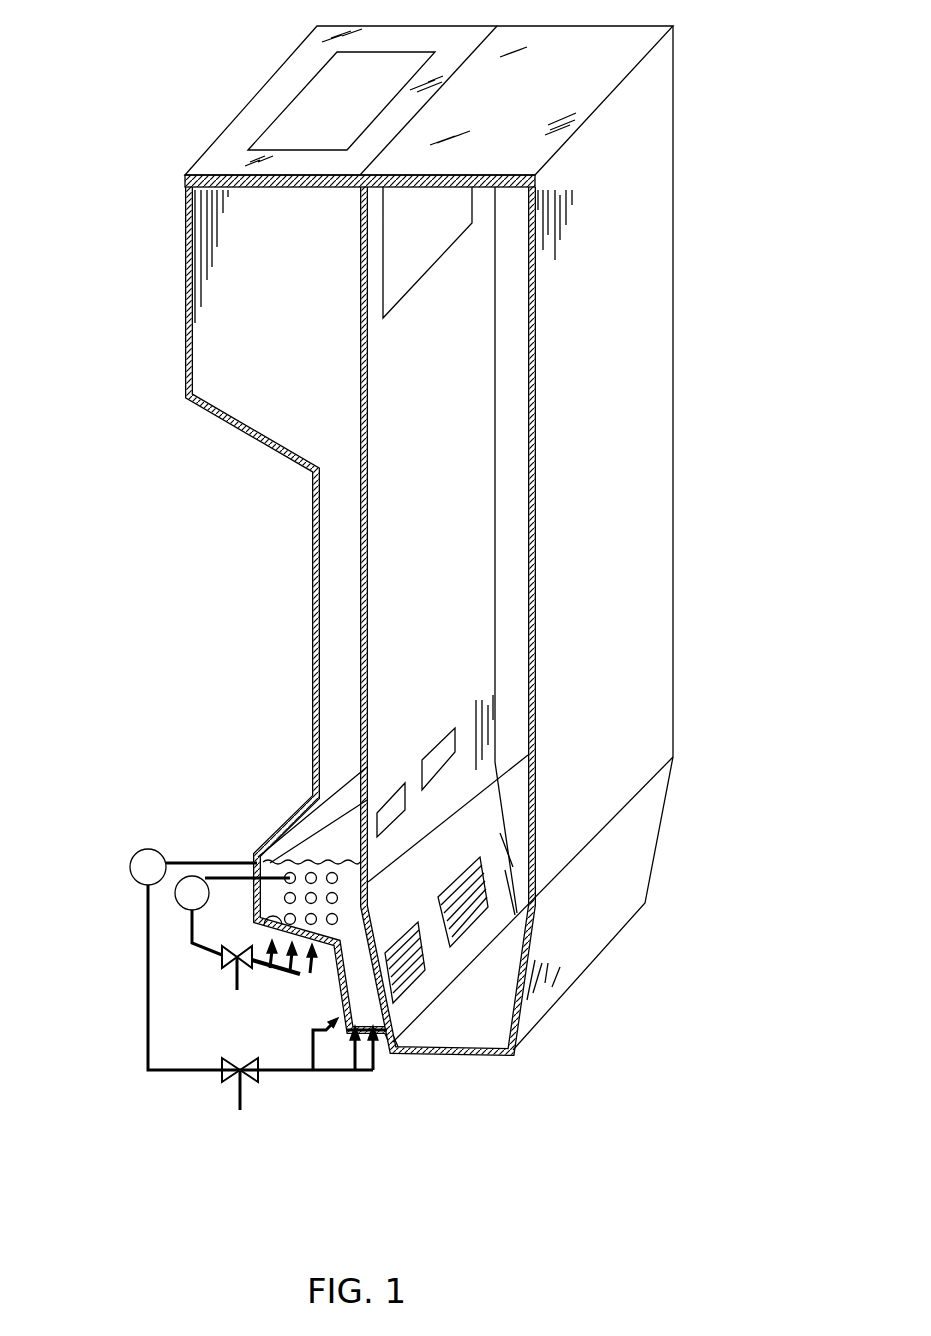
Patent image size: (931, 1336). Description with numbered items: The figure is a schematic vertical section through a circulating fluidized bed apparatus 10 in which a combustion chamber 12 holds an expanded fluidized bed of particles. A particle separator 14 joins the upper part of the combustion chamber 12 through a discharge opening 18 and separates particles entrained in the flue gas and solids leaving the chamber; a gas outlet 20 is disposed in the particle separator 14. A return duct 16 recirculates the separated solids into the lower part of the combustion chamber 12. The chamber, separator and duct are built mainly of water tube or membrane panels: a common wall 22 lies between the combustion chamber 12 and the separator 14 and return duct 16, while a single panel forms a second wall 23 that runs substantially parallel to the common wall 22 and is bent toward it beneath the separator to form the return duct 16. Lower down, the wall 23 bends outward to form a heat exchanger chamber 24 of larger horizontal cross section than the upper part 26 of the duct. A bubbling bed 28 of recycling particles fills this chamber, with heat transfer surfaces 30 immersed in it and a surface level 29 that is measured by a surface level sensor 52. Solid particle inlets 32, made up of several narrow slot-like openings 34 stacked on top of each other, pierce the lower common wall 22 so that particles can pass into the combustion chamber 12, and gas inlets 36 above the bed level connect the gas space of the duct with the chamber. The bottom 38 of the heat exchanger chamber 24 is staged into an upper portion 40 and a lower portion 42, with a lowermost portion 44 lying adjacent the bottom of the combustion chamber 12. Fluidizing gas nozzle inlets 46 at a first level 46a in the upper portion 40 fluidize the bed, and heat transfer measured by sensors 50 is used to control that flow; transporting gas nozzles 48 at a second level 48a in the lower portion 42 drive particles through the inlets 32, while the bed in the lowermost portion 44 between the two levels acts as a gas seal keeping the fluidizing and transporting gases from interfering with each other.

The apparatus housing 10 is at (712, 256).
The combustion chamber 12 is at (512, 547).
The particle separator 14 is at (228, 303).
The return duct 16 is at (212, 752).
The discharge opening 18 is at (408, 258).
The gas outlet 20 is at (307, 117).
The common wall 22 is at (362, 552).
The second wall 23 is at (312, 498).
The heat exchanger chamber 24 is at (337, 843).
The upper part of the return duct 26 is at (333, 637).
The bubbling bed 28 is at (255, 857).
The surface level 29 is at (293, 860).
The heat transfer surfaces 30 is at (290, 872).
The solid particle inlets 32 is at (463, 862).
The openings 34 is at (473, 867).
The gas inlets 36 is at (425, 760).
The bottom 38 is at (320, 963).
The upper portion 40 is at (220, 952).
The lower portion 42 is at (345, 1000).
The lowermost portion 44 is at (398, 1017).
The fluidizing gas nozzle inlets 46 is at (277, 968).
The first level 46a is at (297, 972).
The transporting gas nozzles 48 is at (367, 1072).
The second level 48a is at (385, 1072).
The sensors 50 is at (176, 906).
The surface level sensor 52 is at (133, 853).